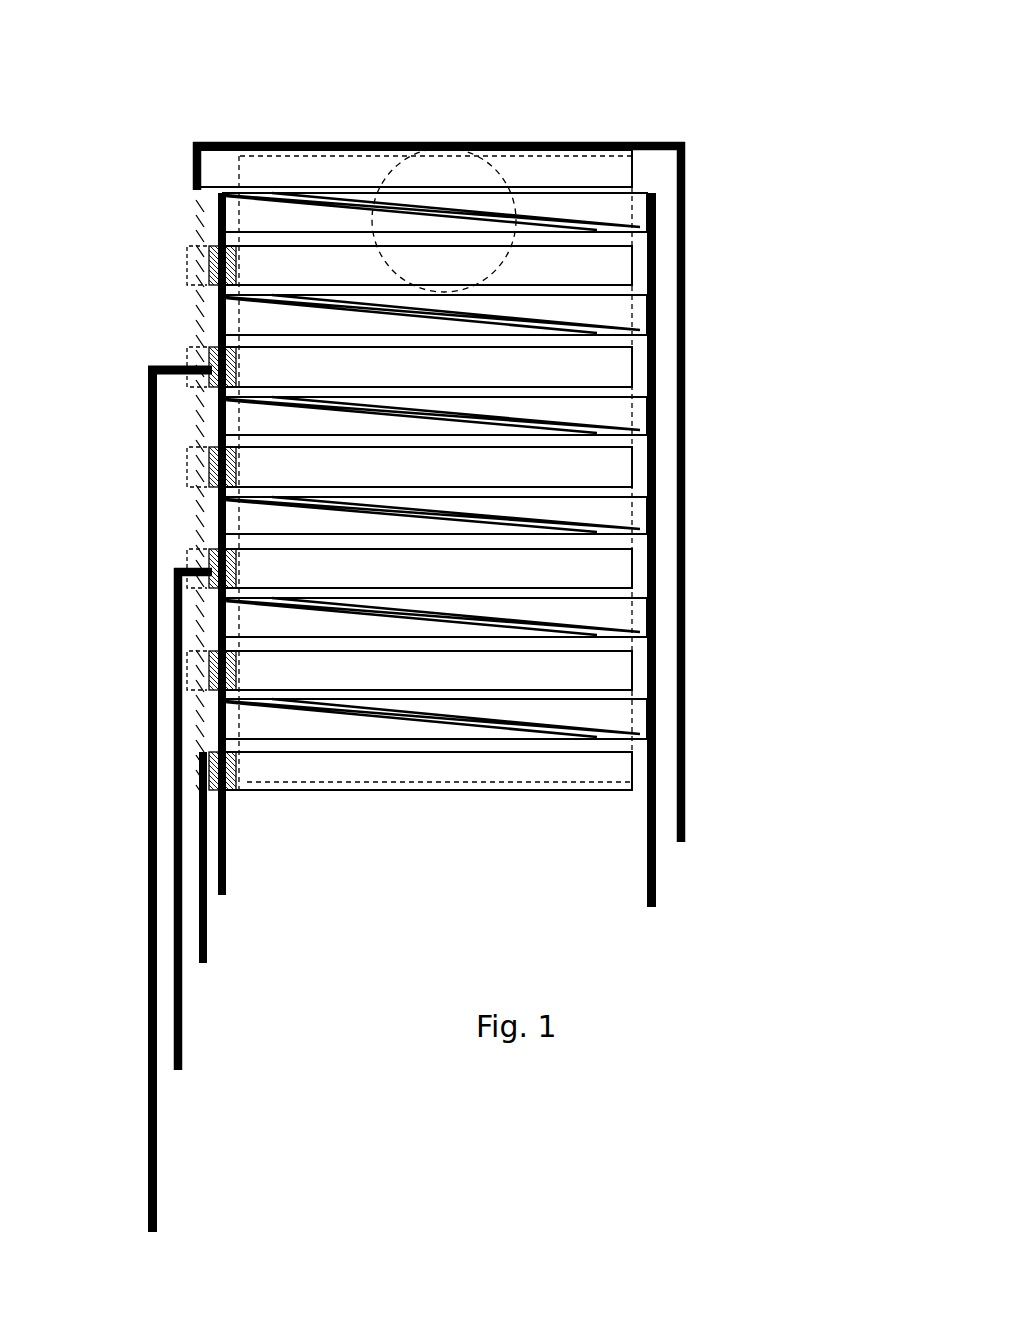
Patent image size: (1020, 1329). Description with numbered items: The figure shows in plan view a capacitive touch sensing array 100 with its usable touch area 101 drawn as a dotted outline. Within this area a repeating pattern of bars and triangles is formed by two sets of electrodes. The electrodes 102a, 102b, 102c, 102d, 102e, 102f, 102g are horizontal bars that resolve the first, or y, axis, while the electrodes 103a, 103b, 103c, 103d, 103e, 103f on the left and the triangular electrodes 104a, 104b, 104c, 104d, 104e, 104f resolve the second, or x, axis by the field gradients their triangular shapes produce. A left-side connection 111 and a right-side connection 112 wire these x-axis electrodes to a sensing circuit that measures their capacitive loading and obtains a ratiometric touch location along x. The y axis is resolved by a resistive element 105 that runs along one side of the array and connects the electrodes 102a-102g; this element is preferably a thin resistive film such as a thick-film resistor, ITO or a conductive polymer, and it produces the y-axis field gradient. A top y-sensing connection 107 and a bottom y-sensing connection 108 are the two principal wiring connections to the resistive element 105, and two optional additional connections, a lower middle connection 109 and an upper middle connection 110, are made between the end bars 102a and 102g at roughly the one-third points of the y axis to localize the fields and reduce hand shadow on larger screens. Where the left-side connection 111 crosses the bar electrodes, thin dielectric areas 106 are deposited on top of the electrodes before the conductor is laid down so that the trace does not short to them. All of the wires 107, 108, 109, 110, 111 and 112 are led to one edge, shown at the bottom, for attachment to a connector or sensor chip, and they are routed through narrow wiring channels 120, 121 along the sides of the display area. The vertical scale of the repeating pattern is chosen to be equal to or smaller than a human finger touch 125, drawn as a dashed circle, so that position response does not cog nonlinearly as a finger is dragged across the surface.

The capacitive touch sensing array 100 is at (596, 67).
The usable touch area 101 is at (238, 173).
The electrode 102a is at (612, 771).
The electrode 102b is at (612, 670).
The electrode 102c is at (612, 568).
The electrode 102d is at (612, 467).
The electrode 102e is at (612, 367).
The electrode 102f is at (612, 265).
The electrode 102g is at (612, 168).
The electrode 103a is at (257, 722).
The electrode 103b is at (257, 620).
The electrode 103c is at (257, 518).
The electrode 103d is at (257, 418).
The electrode 103e is at (258, 320).
The electrode 103f is at (260, 222).
The electrode 104a is at (612, 719).
The electrode 104b is at (612, 617).
The electrode 104c is at (612, 515).
The electrode 104d is at (612, 416).
The electrode 104e is at (612, 315).
The electrode 104f is at (612, 212).
The resistive element 105 is at (205, 303).
The thin dielectric area 106 is at (203, 470).
The top y-sensing connection 107 is at (687, 785).
The bottom y-sensing connection 108 is at (207, 925).
The lower middle connection 109 is at (183, 1010).
The upper middle connection 110 is at (158, 1150).
The left-side connection 111 is at (229, 855).
The right-side connection 112 is at (658, 868).
The wiring channel 120 is at (232, 103).
The wiring channel 121 is at (692, 100).
The human finger touch 125 is at (440, 160).